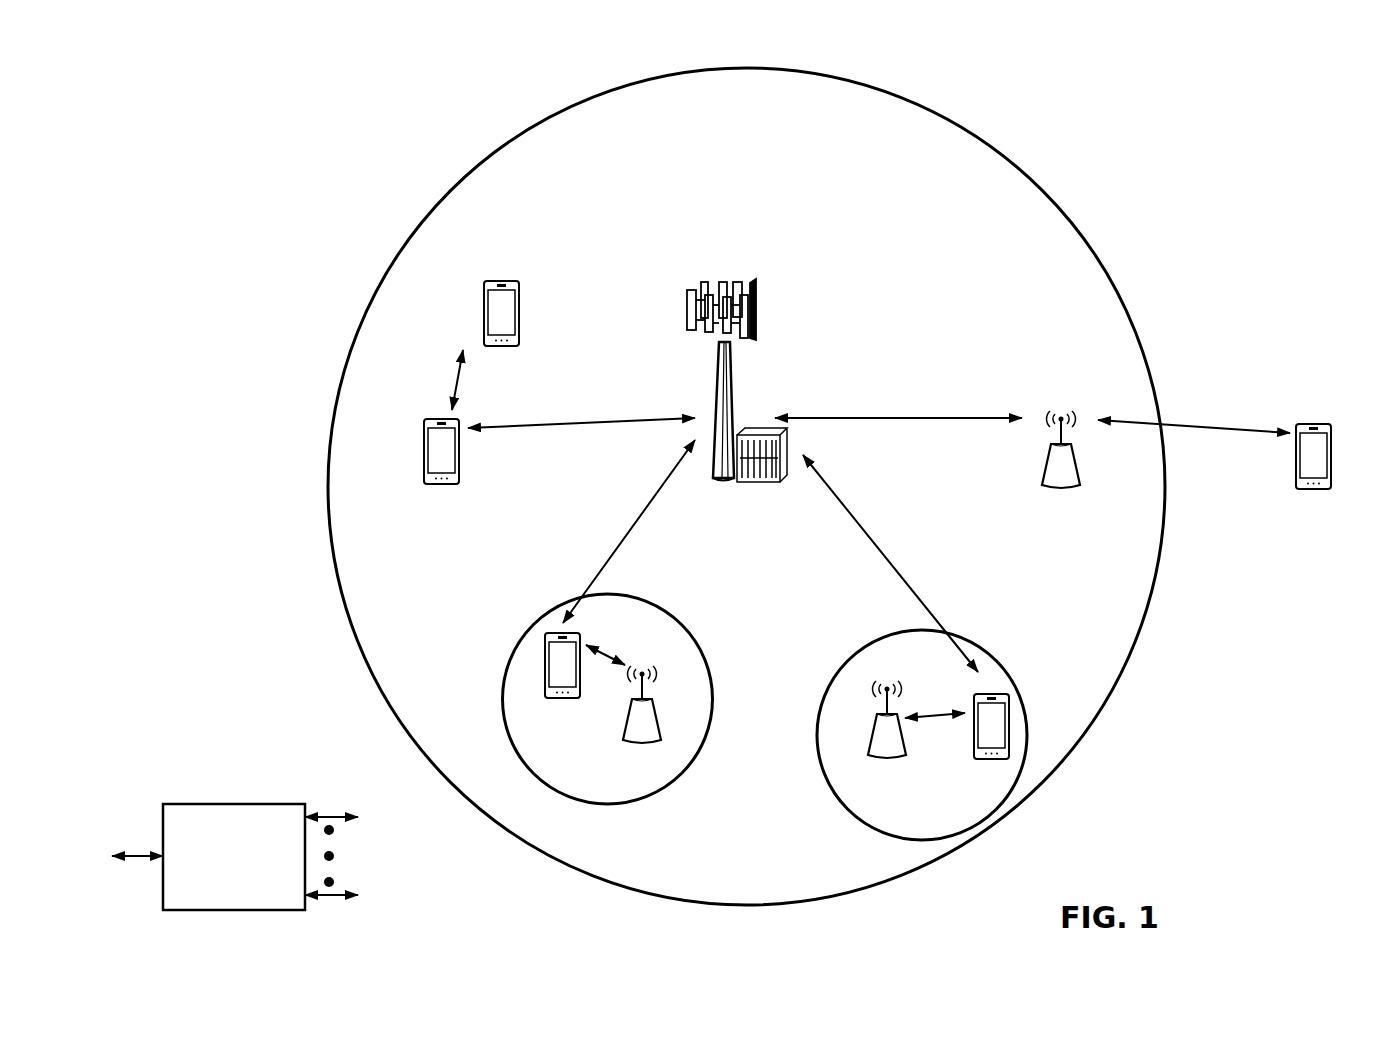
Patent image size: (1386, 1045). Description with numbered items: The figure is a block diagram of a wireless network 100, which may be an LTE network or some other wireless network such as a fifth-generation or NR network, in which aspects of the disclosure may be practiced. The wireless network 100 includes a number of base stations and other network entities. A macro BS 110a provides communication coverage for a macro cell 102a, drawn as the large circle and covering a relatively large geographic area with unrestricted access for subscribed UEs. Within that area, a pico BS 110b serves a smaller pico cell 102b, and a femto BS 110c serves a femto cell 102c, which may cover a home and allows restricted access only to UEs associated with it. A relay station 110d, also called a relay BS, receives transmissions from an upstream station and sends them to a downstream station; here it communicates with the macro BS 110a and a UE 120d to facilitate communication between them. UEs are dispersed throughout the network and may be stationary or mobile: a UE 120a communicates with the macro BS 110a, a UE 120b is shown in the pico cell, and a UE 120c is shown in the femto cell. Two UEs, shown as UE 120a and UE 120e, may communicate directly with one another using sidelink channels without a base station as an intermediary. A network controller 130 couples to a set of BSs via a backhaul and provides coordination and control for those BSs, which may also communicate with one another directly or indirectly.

The wireless network 100 is at (218, 66).
The macro cell 102a is at (1025, 172).
The pico cell 102b is at (697, 640).
The femto cell 102c is at (859, 646).
The macro BS 110a is at (750, 272).
The pico BS 110b is at (660, 730).
The femto BS 110c is at (870, 745).
The relay station 110d is at (1063, 410).
The UE 120a is at (424, 445).
The UE 120b is at (555, 700).
The UE 120c is at (983, 762).
The UE 120d is at (1330, 421).
The UE 120e is at (484, 300).
The network controller 130 is at (233, 804).